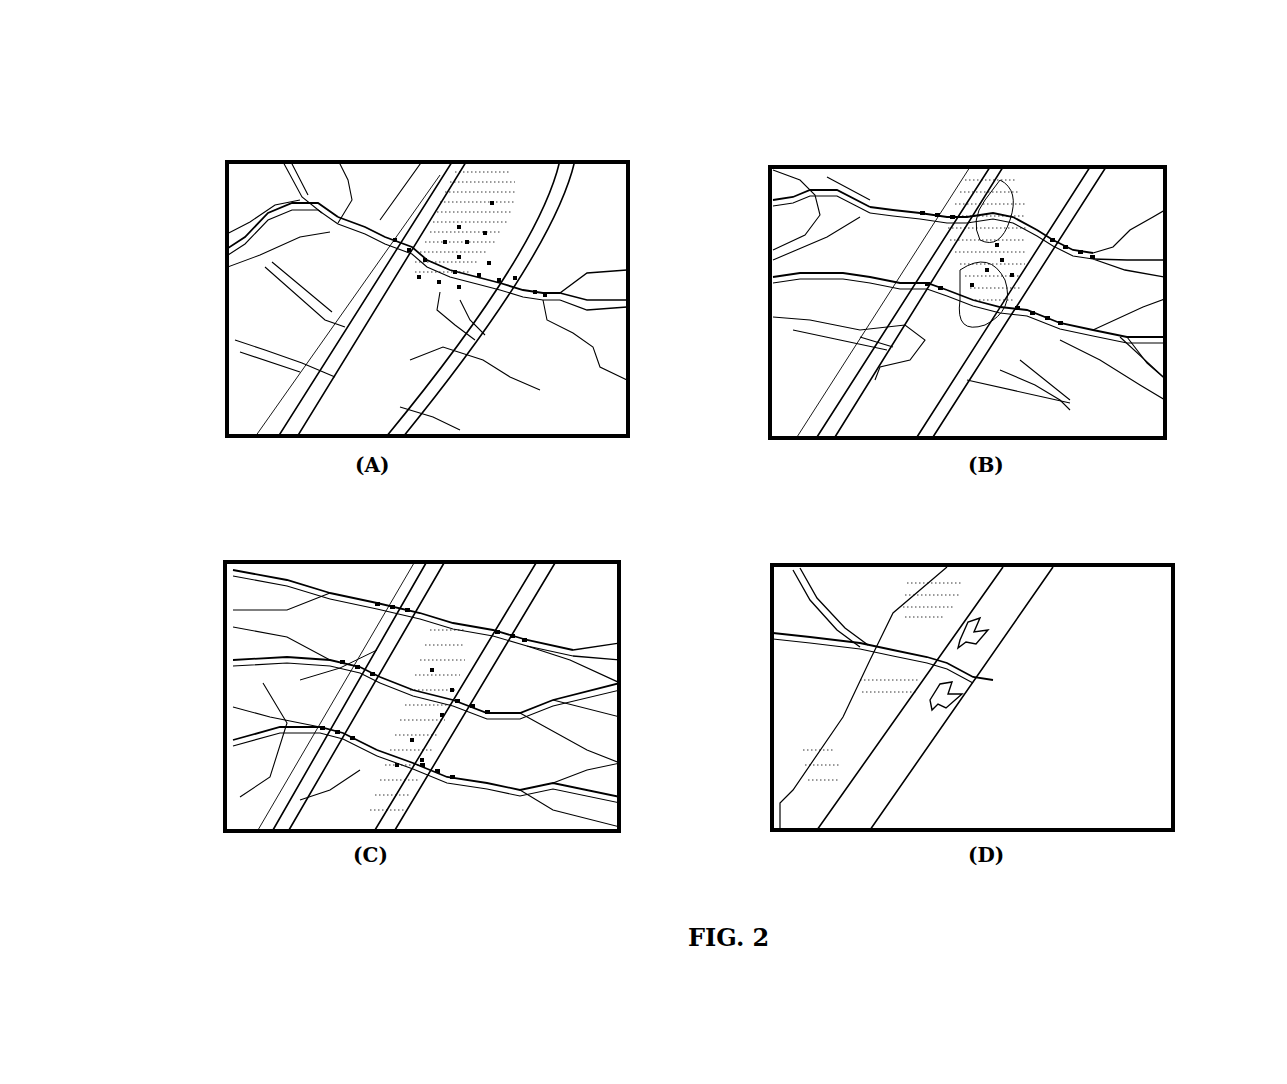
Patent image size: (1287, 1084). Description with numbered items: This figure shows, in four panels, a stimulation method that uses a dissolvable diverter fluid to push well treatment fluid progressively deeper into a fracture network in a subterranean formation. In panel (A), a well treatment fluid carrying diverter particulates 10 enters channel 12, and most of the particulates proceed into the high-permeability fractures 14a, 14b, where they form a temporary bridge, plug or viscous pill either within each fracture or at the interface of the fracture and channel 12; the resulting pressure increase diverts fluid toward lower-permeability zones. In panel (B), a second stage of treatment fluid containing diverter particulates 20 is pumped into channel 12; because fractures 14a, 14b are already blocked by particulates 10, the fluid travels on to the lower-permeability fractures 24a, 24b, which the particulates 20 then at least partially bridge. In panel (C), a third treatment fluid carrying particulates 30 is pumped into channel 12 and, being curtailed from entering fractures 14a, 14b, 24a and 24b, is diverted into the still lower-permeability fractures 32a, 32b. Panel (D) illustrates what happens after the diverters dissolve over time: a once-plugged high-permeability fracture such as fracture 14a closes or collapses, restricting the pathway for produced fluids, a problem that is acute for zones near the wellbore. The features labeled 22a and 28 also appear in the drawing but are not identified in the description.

The diverter particulates 10 is at (487, 172).
The channel 12 is at (522, 175).
The fracture 14a is at (340, 228).
The fracture 14b is at (565, 283).
The diverter particulates 20 is at (1030, 190).
The river tributary 22a is at (863, 620).
The fracture 24a is at (805, 290).
The fracture 24b is at (1070, 318).
The branch road 28 is at (1043, 397).
The particulates 30 is at (300, 800).
The fracture 32a is at (300, 730).
The fracture 32b is at (560, 798).